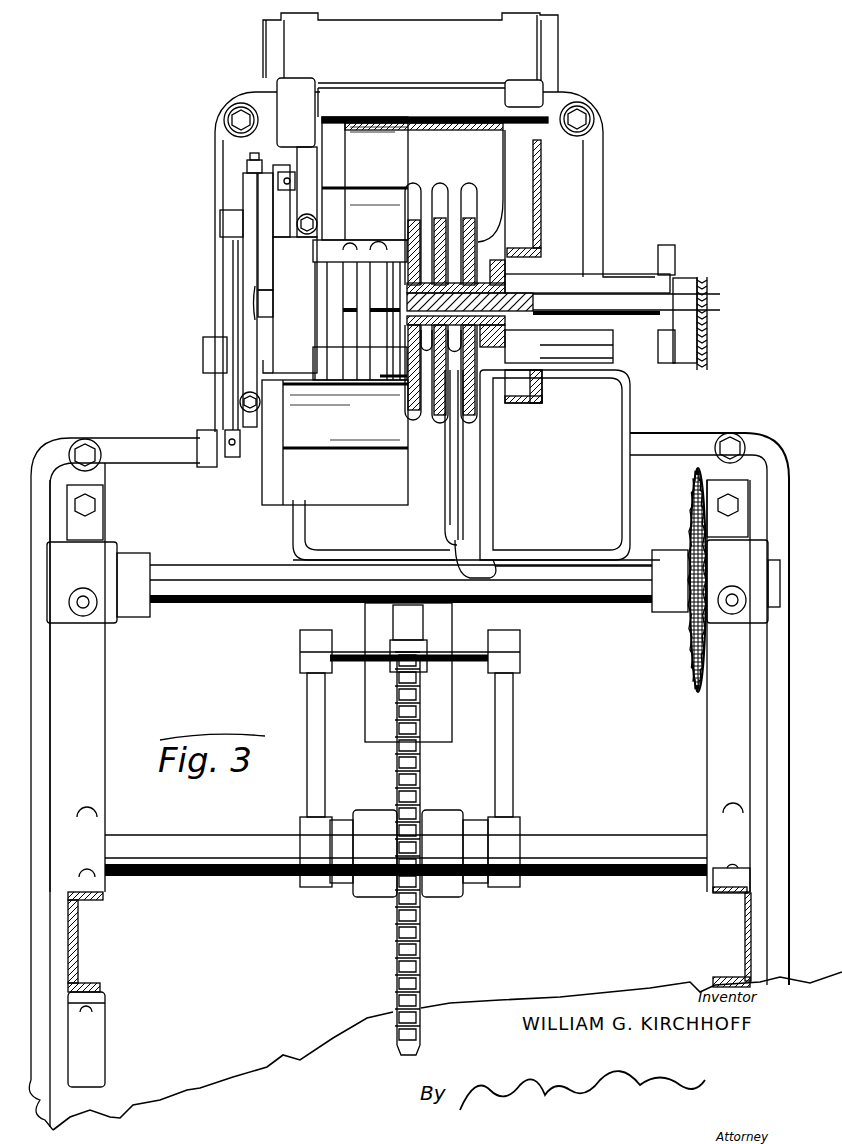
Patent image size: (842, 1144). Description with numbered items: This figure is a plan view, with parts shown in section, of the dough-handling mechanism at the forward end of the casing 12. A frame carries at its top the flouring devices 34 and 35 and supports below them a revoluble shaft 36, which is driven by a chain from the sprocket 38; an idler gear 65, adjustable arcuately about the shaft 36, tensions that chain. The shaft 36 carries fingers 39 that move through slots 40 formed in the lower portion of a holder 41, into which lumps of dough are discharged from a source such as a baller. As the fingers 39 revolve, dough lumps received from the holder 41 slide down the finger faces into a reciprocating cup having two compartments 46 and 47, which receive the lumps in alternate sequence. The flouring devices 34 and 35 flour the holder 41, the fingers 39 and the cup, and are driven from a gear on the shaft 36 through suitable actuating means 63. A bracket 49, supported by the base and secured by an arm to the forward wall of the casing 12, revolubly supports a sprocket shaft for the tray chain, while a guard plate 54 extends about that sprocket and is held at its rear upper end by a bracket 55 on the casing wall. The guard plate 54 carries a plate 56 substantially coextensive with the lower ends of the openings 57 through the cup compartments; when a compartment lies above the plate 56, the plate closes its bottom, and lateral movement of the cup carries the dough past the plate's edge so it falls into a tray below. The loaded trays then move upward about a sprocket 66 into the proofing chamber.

The casing 12 is at (78, 950).
The flouring device 34 is at (355, 160).
The flouring device 35 is at (300, 488).
The revoluble shaft 36 is at (690, 292).
The sprocket 38 is at (693, 655).
The fingers 39 is at (480, 265).
The slots 40 is at (475, 213).
The holder 41 is at (483, 172).
The compartment 46 is at (613, 417).
The compartment 47 is at (300, 553).
The bracket 49 is at (748, 648).
The guard plate 54 is at (443, 728).
The bracket 55 is at (507, 695).
The plate 56 is at (375, 520).
The openings 57 is at (565, 498).
The actuating means 63 is at (228, 390).
The idler gear 65 is at (712, 372).
The sprocket 66 is at (408, 797).